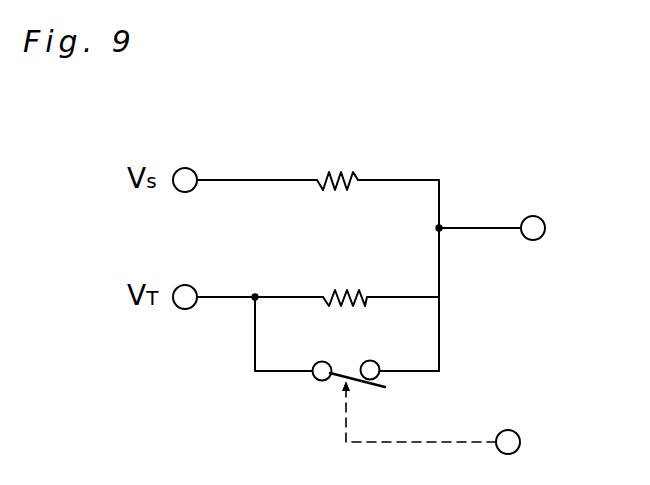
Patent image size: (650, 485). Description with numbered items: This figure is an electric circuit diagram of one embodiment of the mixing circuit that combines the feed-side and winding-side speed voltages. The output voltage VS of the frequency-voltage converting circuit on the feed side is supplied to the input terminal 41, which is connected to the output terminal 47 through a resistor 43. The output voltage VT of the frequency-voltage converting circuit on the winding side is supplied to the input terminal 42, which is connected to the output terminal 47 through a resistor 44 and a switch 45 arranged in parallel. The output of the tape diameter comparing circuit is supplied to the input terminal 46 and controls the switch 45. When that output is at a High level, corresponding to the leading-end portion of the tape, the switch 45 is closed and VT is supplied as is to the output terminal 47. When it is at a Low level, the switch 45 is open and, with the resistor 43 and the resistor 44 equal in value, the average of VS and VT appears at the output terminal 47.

The input terminal 41 is at (187, 168).
The input terminal 42 is at (185, 309).
The resistor 43 is at (343, 174).
The resistor 44 is at (350, 291).
The switch 45 is at (338, 367).
The input terminal 46 is at (520, 439).
The output terminal 47 is at (543, 237).